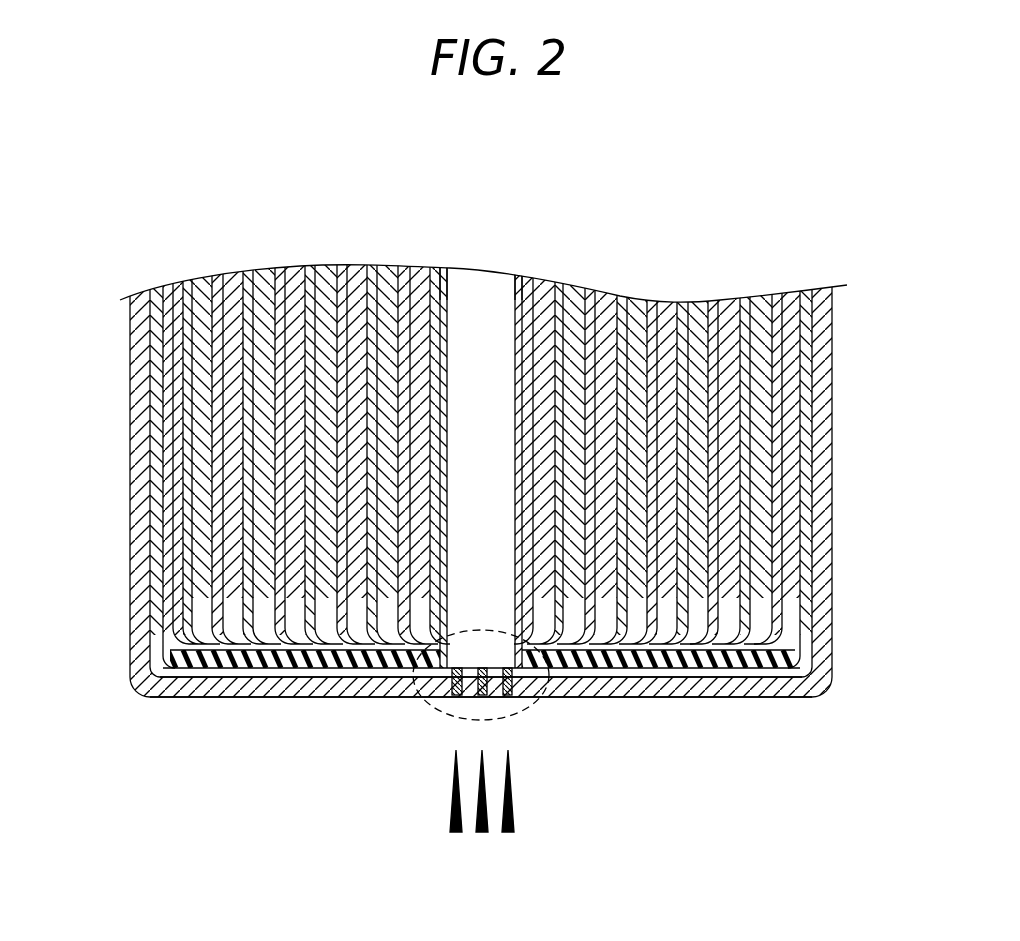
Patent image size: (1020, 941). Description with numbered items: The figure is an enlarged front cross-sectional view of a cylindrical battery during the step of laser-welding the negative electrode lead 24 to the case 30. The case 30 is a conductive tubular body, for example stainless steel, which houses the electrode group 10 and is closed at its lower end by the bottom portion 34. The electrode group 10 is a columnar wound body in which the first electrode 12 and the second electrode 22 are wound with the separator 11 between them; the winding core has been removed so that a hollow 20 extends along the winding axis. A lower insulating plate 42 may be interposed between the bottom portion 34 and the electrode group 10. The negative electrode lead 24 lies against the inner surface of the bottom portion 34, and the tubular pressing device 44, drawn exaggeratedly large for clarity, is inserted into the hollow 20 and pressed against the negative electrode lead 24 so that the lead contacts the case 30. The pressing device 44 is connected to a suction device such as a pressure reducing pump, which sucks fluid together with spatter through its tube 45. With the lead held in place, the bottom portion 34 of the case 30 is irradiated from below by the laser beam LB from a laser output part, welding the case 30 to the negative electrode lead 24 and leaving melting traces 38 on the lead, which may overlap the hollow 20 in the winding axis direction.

The electrode group 10 is at (536, 459).
The separator 11 is at (772, 368).
The first electrode 12 is at (763, 408).
The second electrode 22 is at (733, 470).
The hollow 20 is at (497, 457).
The negative electrode lead 24 is at (322, 678).
The case 30 is at (143, 448).
The bottom portion 34 is at (637, 690).
The melting traces 38 is at (480, 695).
The lower insulating plate 42 is at (810, 655).
The pressing device 44 is at (492, 262).
The tube 45 is at (447, 283).
The laser beam LB is at (482, 812).